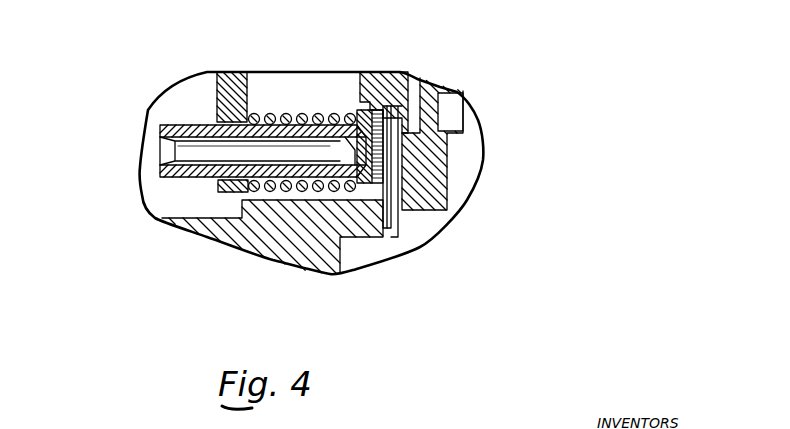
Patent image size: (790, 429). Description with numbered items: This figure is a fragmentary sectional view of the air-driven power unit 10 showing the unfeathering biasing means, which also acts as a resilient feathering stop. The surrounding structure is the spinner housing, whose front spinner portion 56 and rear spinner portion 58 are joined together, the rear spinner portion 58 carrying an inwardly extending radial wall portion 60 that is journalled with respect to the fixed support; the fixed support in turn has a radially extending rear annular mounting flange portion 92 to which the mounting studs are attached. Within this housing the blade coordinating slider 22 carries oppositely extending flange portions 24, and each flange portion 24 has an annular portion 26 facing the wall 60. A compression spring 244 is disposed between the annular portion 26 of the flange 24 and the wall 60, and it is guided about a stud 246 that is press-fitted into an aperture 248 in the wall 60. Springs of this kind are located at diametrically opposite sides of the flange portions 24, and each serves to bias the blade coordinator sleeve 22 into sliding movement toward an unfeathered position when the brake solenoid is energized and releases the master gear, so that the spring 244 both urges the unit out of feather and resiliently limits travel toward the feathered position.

The valve assembly 10 is at (280, 145).
The blade coordinating slider 22 is at (217, 87).
The flange portion 24 is at (237, 78).
The annular portion 26 is at (218, 189).
The front spinner portion 56 is at (210, 228).
The rear spinner portion 58 is at (335, 247).
The radial wall portion 60 is at (388, 80).
The rear annular mounting flange portion 92 is at (440, 178).
The compression spring 244 is at (297, 113).
The stud 246 is at (160, 164).
The aperture 248 is at (387, 200).